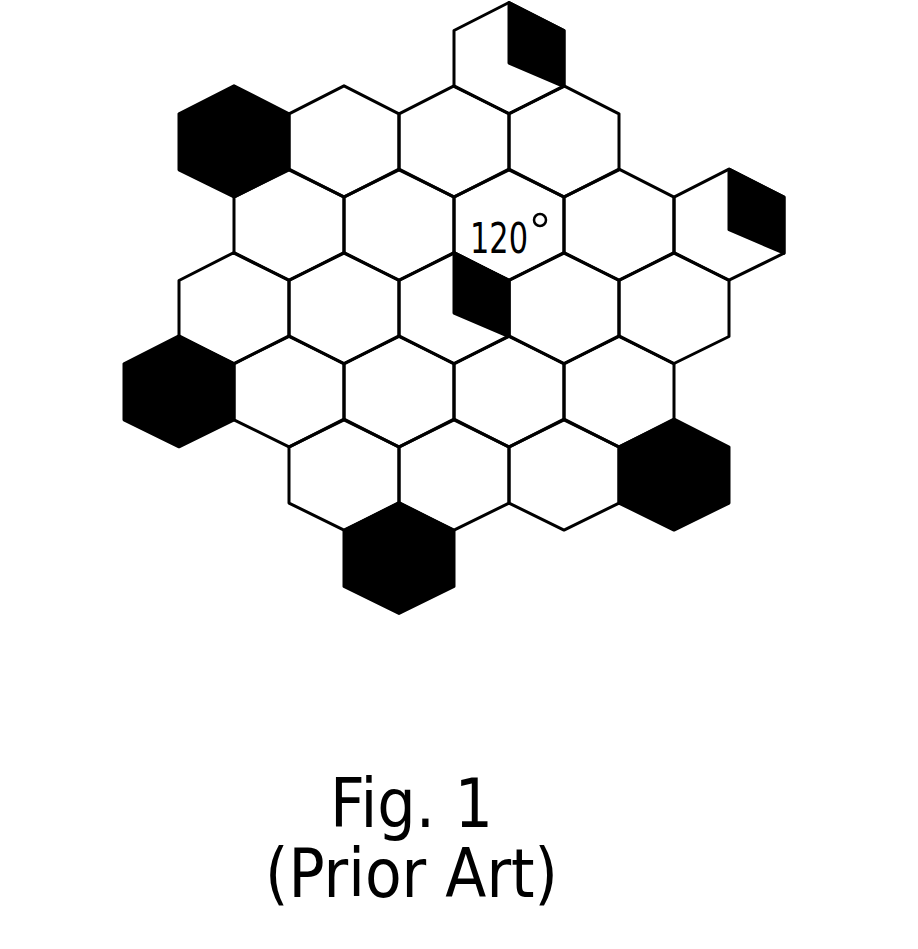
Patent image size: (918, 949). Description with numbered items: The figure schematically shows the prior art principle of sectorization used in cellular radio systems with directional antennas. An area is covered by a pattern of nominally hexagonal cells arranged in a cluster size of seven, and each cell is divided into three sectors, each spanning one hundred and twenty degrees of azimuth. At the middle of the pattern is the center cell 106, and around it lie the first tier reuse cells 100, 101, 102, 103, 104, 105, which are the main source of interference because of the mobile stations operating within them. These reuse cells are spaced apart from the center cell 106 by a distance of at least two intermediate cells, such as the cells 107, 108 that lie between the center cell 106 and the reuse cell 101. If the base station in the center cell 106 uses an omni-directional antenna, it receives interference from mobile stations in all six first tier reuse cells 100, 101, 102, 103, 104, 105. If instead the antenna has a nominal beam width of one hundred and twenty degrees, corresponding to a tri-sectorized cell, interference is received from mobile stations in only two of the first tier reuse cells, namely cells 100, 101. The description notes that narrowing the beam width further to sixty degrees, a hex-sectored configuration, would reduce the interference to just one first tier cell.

The first tier reuse cell 100 is at (447, 590).
The first tier reuse cell 101 is at (133, 358).
The first tier reuse cell 102 is at (179, 112).
The first tier reuse cell 103 is at (455, 30).
The first tier reuse cell 104 is at (701, 189).
The first tier reuse cell 105 is at (730, 478).
The center cell 106 is at (454, 308).
The intermediate cell 107 is at (399, 391).
The intermediate cell 108 is at (289, 391).